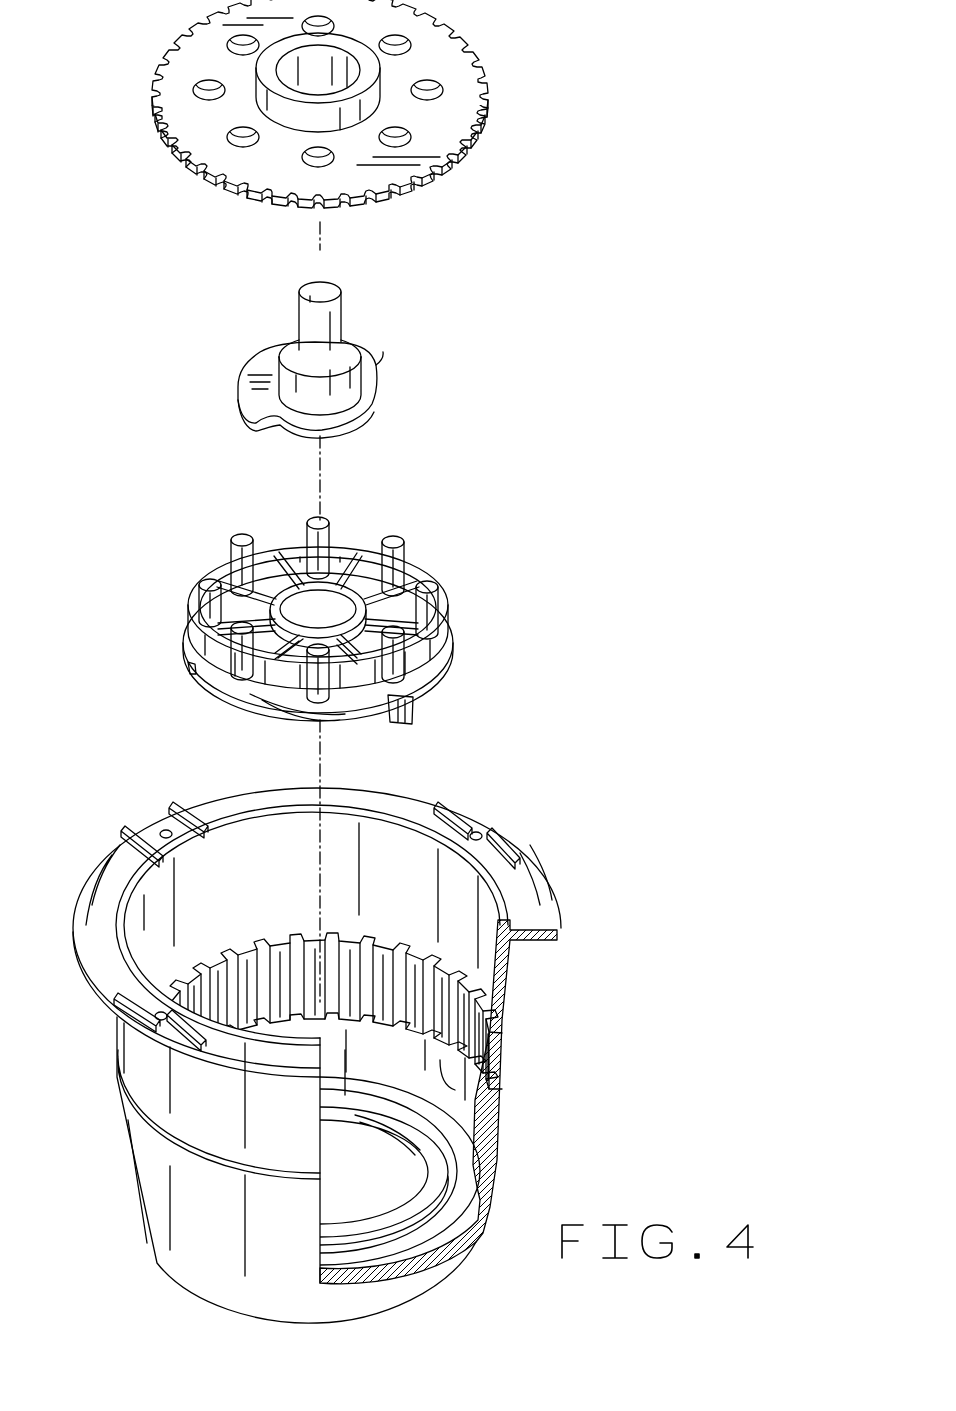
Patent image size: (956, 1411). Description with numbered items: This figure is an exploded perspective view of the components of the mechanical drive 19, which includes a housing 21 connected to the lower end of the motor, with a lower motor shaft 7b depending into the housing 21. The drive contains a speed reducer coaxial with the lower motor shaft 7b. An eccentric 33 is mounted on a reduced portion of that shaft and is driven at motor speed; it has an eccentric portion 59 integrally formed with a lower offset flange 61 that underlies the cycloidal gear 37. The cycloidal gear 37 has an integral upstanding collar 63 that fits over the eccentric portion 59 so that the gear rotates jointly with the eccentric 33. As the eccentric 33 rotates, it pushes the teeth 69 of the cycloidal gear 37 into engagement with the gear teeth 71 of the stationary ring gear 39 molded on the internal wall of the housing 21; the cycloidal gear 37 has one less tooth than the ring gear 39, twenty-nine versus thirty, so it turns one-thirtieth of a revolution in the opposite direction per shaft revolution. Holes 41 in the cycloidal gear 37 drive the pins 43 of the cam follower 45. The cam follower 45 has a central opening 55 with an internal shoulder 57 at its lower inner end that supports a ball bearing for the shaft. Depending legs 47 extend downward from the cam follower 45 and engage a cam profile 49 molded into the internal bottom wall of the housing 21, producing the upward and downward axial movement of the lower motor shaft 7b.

The mechanical drive 19 is at (568, 564).
The cycloidal gear 37 is at (351, 118).
The holes 41 is at (205, 88).
The upstanding collar 63 is at (382, 93).
The teeth 69 is at (207, 182).
The eccentric 33 is at (320, 348).
The lower motor shaft 7b is at (336, 320).
The eccentric portion 59 is at (300, 385).
The lower offset flange 61 is at (265, 365).
The cam follower 45 is at (338, 625).
The pins 43 is at (243, 541).
The central opening 55 is at (280, 619).
The internal shoulder 57 is at (333, 608).
The depending legs 47 is at (402, 722).
The housing 21 is at (365, 1055).
The gear teeth 71 is at (372, 962).
The ring gear 39 is at (437, 1050).
The cam profile 49 is at (431, 1186).